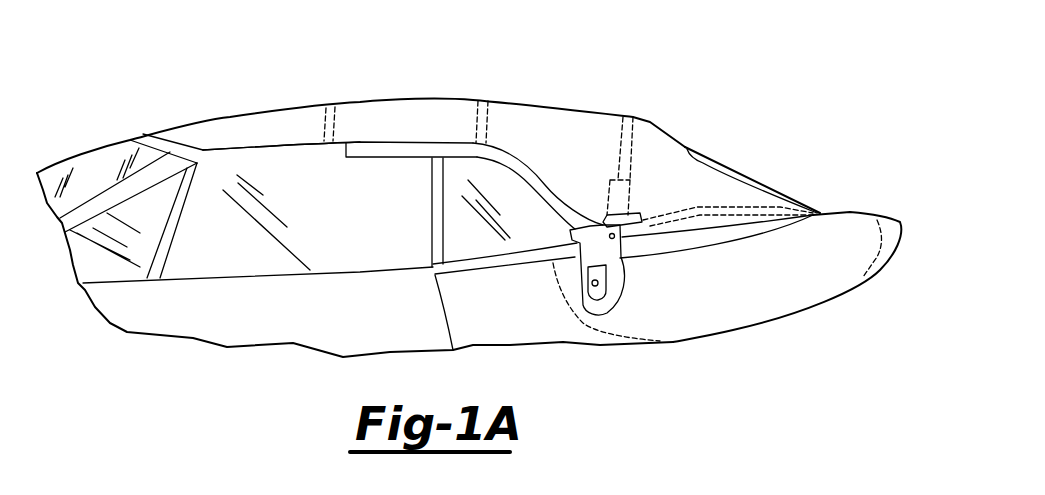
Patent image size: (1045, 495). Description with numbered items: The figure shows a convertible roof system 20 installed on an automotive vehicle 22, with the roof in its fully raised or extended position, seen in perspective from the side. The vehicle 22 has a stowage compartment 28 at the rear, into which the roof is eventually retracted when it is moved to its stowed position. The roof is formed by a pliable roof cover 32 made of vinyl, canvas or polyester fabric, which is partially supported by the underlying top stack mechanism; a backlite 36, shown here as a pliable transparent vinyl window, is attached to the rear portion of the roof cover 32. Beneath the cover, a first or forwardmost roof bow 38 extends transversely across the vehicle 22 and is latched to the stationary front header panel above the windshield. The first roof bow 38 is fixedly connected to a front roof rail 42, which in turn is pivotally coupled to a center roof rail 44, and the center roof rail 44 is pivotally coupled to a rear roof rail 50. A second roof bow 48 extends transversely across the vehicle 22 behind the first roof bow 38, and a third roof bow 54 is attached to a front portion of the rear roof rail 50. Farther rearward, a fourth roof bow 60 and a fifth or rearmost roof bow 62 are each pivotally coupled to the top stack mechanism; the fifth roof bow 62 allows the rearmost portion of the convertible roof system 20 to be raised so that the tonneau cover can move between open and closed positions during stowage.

The convertible roof system 20 is at (684, 116).
The automotive vehicle 22 is at (398, 327).
The stowage compartment 28 is at (717, 317).
The roof cover 32 is at (370, 113).
The backlite 36 is at (707, 158).
The first roof bow 38 is at (180, 140).
The front roof rail 42 is at (277, 152).
The center roof rail 44 is at (397, 150).
The second roof bow 48 is at (330, 107).
The rear roof rail 50 is at (527, 175).
The third roof bow 54 is at (485, 103).
The fourth roof bow 60 is at (633, 117).
The fifth roof bow 62 is at (763, 210).